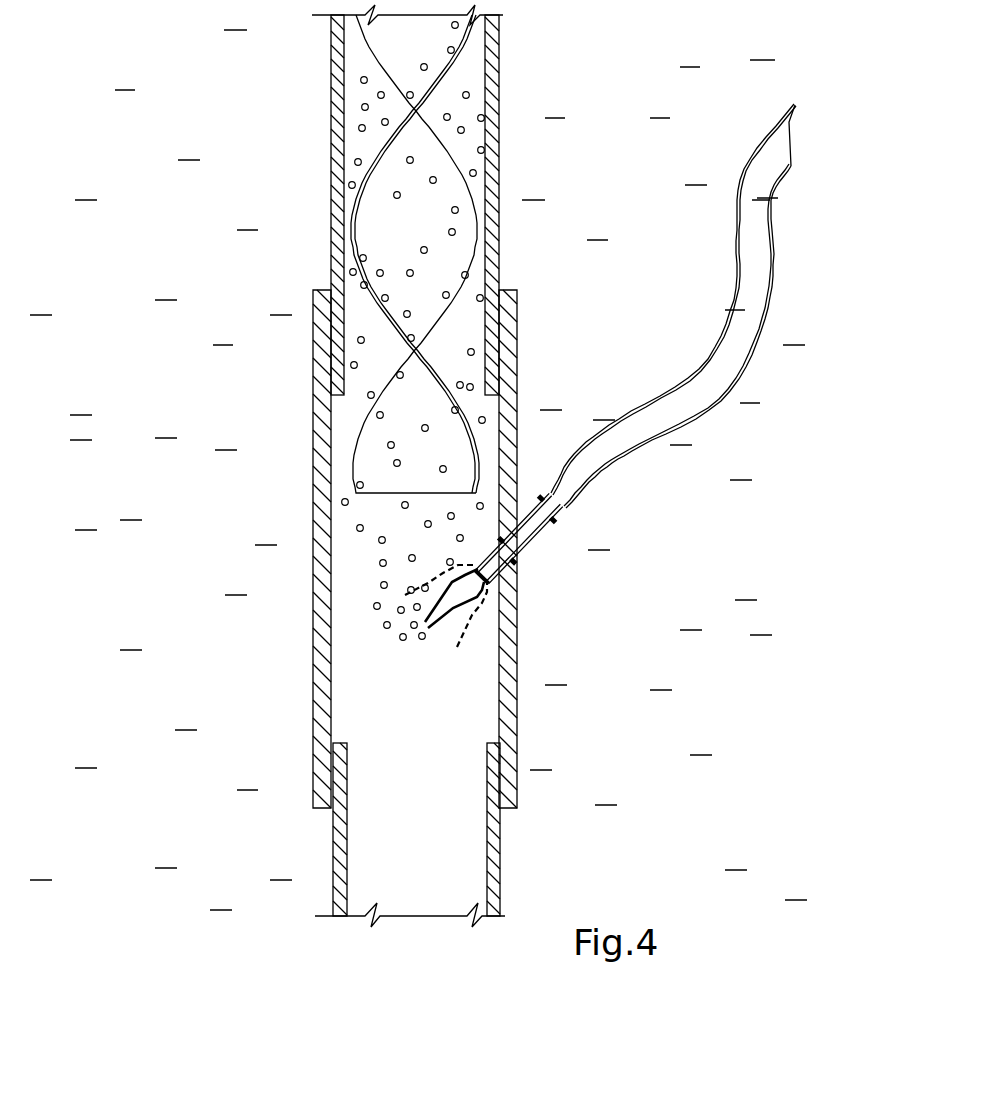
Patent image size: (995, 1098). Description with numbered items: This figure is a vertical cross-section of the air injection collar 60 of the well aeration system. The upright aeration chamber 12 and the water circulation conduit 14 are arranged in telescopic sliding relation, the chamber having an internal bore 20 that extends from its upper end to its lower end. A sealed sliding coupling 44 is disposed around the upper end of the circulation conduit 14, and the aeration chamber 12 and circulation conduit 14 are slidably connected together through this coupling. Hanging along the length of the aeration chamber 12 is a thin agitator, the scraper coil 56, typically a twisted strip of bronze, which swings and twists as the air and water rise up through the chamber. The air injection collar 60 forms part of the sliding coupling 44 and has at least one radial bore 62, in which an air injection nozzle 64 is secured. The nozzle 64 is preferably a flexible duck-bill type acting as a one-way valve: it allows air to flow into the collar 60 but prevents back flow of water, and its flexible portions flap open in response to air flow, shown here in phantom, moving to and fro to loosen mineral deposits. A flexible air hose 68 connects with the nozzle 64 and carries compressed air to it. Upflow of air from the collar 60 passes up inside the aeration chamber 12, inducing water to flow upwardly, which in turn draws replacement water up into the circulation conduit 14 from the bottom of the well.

The aeration chamber 12 is at (332, 148).
The water circulation conduit 14 is at (335, 842).
The internal bore 20 is at (484, 112).
The sealed sliding coupling 44 is at (340, 767).
The scraper coil 56 is at (373, 425).
The air injection collar 60 is at (317, 618).
The radial bore 62 is at (510, 558).
The air injection nozzle 64 is at (543, 531).
The flexible air hose 68 is at (725, 363).